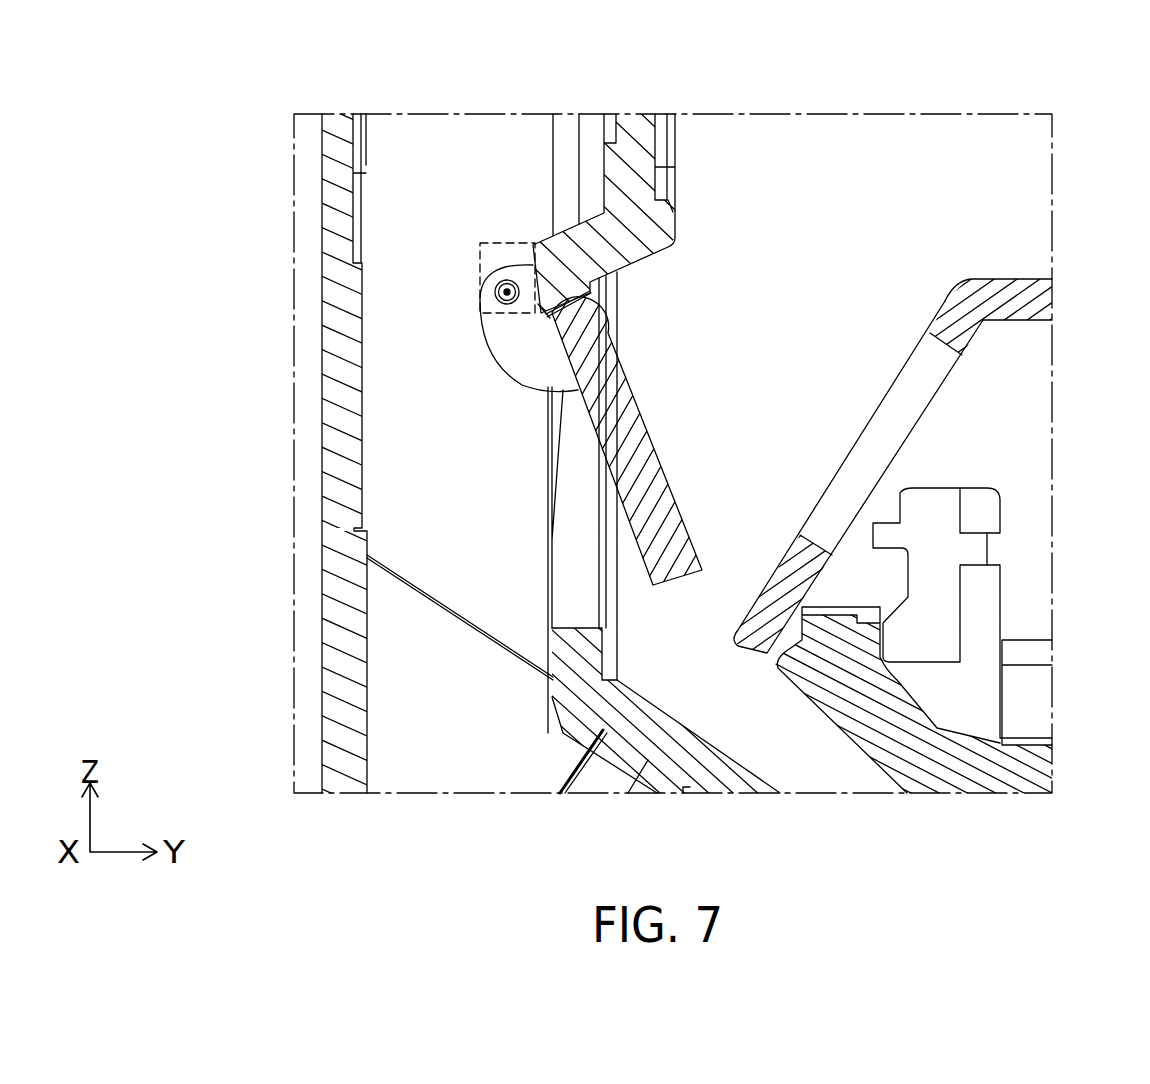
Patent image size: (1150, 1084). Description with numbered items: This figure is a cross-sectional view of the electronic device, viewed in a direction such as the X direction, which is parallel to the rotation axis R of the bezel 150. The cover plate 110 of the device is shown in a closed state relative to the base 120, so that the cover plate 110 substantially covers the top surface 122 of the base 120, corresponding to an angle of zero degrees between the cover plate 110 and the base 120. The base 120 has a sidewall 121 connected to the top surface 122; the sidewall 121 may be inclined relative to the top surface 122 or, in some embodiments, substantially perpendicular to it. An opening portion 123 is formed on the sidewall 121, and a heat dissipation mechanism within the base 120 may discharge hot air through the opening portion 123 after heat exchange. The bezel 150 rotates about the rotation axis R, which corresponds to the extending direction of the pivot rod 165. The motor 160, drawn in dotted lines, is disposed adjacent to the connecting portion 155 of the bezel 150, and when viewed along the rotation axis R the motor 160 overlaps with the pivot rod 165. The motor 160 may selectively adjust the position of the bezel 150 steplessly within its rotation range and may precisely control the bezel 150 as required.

The cover plate 110 is at (410, 132).
The base 120 is at (937, 602).
The sidewall 121 is at (960, 310).
The top surface 122 is at (1030, 300).
The opening portion 123 is at (887, 437).
The bezel 150 is at (632, 463).
The connecting portion 155 is at (525, 342).
The motor 160 is at (513, 243).
The pivot rod 165 is at (500, 290).
The rotation axis R is at (507, 292).